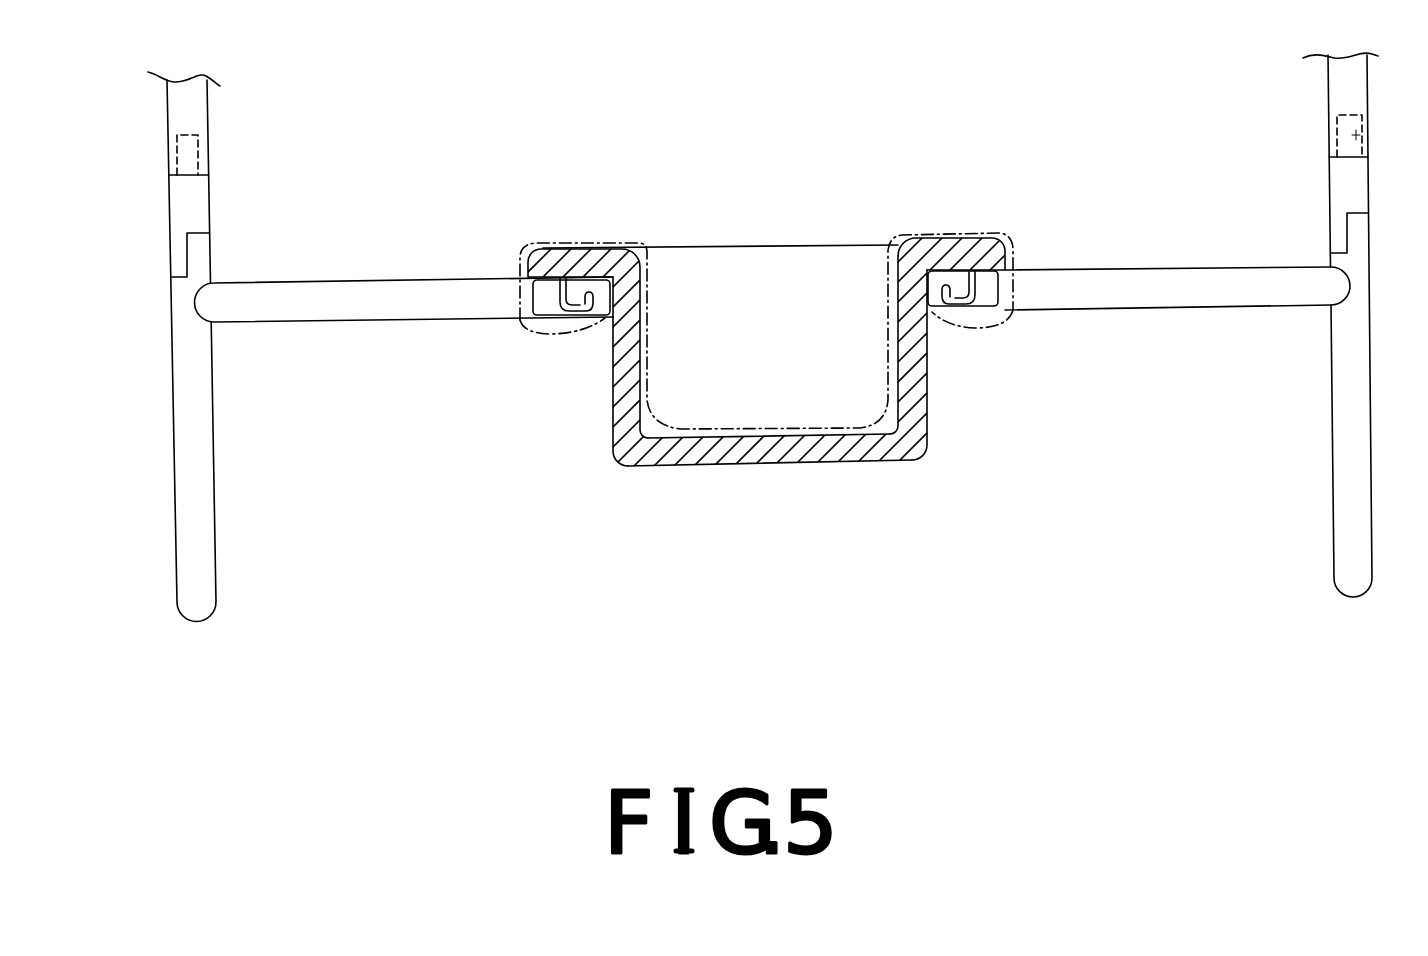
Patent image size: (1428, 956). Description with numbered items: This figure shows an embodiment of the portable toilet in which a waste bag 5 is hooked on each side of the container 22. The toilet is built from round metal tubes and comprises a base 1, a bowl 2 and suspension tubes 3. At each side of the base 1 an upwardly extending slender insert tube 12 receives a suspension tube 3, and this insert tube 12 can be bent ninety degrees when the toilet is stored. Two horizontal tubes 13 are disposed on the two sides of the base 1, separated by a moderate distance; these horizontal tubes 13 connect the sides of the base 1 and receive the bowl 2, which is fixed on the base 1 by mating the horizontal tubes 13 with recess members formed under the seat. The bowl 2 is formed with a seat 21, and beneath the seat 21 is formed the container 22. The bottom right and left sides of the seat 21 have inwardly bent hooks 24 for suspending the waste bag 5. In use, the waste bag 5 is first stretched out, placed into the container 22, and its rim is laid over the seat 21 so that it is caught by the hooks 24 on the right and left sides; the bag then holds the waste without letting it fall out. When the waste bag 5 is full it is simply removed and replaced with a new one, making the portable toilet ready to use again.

The base 1 is at (153, 428).
The bowl 2 is at (622, 470).
The suspension tube 3 is at (192, 115).
The waste bag 5 is at (652, 290).
The insert tube 12 is at (167, 150).
The horizontal tube 13 is at (367, 280).
The seat 21 is at (950, 250).
The container 22 is at (798, 452).
The hook 24 is at (565, 318).